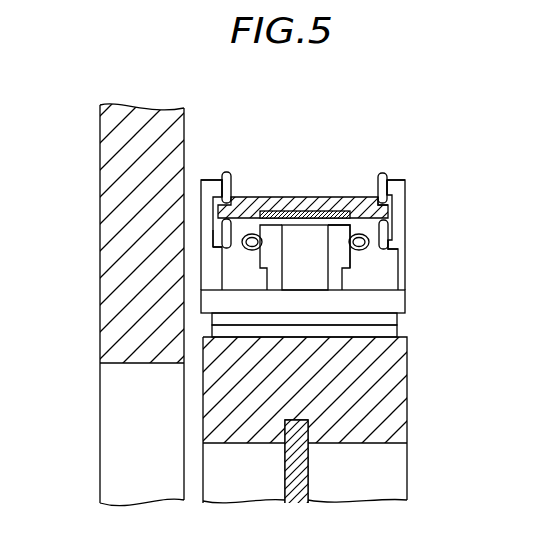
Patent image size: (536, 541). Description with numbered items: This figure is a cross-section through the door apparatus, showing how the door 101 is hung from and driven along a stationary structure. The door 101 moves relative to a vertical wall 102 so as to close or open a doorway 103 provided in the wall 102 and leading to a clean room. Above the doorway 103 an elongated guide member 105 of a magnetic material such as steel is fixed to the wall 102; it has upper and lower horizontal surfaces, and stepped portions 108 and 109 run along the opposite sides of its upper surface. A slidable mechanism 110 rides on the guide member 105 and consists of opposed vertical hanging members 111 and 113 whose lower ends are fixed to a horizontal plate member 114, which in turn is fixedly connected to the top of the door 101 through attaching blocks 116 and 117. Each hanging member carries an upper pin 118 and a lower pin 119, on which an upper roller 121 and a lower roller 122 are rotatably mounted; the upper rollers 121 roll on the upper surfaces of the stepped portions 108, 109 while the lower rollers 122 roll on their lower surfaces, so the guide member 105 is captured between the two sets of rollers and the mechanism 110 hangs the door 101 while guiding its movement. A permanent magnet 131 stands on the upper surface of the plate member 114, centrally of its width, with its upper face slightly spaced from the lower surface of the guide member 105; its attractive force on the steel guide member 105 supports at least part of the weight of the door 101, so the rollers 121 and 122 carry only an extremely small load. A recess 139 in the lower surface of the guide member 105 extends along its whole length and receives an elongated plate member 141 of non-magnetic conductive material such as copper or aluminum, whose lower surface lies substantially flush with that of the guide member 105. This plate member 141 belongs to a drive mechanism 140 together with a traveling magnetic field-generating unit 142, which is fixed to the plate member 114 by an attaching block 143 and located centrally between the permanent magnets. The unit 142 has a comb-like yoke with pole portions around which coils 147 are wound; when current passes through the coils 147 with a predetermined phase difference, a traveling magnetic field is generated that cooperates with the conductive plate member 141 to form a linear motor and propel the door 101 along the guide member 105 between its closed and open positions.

The door 101 is at (408, 412).
The vertical wall 102 is at (100, 168).
The doorway 103 is at (122, 363).
The elongated guide member 105 is at (303, 173).
The stepped portion 108 is at (231, 199).
The stepped portion 109 is at (377, 199).
The slidable mechanism 110 is at (314, 224).
The hanging member 111 is at (407, 218).
The hanging member 113 is at (200, 237).
The horizontal plate member 114 is at (406, 302).
The attaching block 116 is at (398, 320).
The attaching block 117 is at (398, 331).
The upper pin 118 is at (209, 180).
The lower pin 119 is at (213, 224).
The upper roller 121 is at (225, 172).
The lower roller 122 is at (209, 255).
The permanent magnet 131 is at (330, 247).
The recess 139 is at (312, 222).
The drive mechanism 140 is at (213, 266).
The elongated plate member 141 is at (297, 224).
The traveling magnetic field-generating unit 142 is at (256, 250).
The attaching block 143 is at (279, 278).
The coil 147 is at (366, 237).